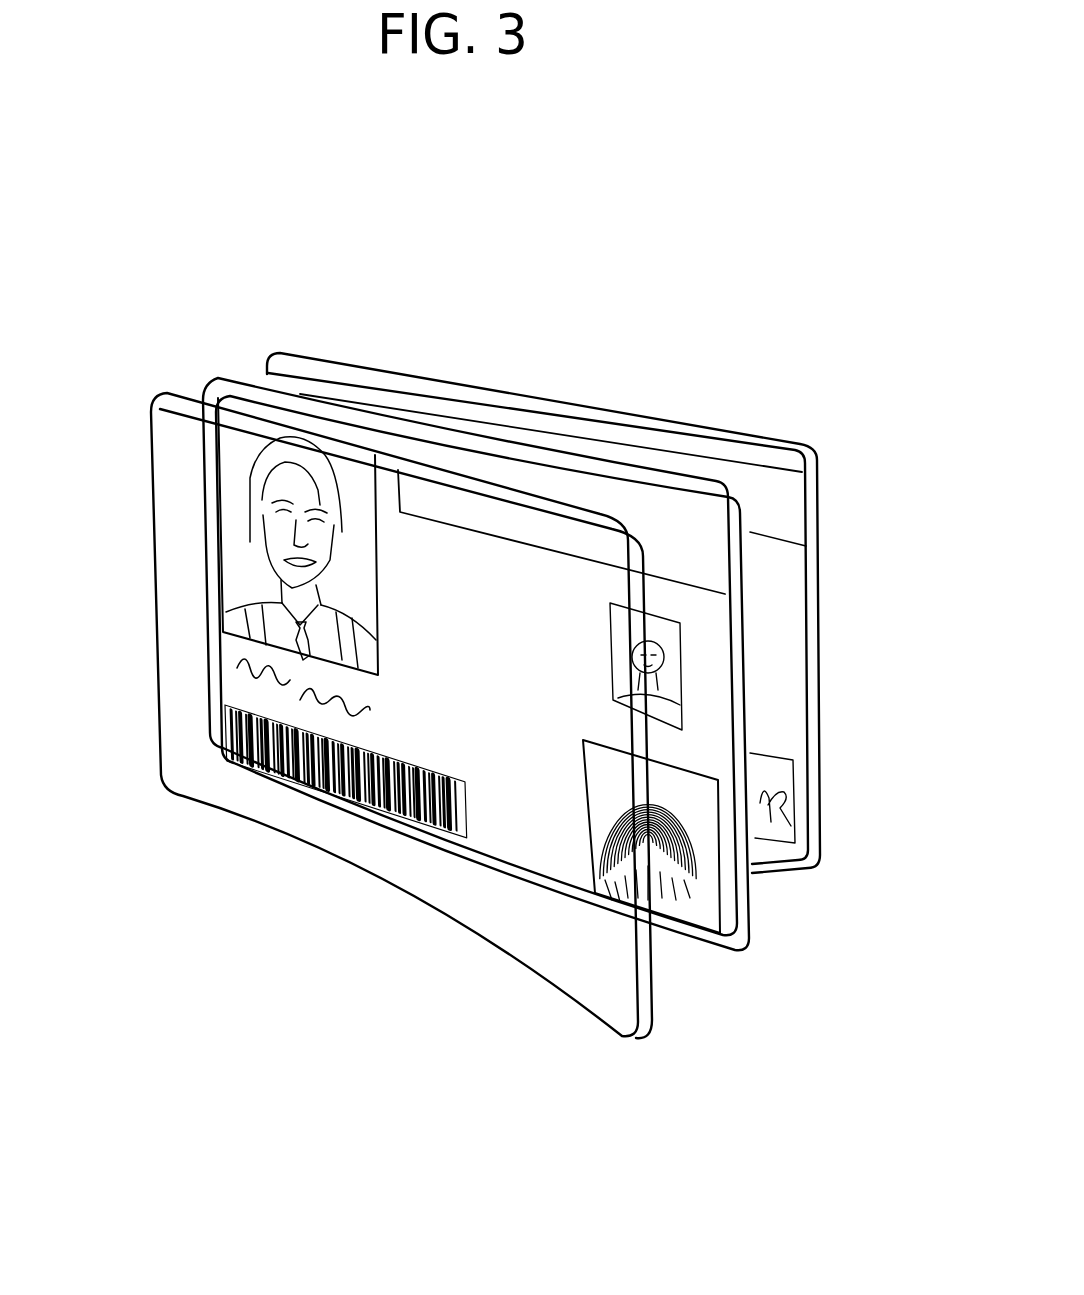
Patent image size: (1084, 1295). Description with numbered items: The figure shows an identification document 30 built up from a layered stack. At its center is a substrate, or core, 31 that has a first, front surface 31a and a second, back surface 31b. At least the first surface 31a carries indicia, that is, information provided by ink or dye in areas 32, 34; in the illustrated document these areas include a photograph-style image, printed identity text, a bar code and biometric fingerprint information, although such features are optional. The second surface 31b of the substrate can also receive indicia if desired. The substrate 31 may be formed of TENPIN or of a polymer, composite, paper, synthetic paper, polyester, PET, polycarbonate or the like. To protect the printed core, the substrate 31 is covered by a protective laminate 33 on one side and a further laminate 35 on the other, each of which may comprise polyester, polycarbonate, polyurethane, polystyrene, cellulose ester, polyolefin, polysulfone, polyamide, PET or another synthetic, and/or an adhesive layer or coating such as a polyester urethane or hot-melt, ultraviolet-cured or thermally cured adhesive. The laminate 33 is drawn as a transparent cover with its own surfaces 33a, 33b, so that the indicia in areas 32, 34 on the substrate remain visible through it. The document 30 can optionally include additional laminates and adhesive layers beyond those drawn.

The identification document 30 is at (500, 685).
The substrate 31 is at (500, 571).
The first surface 31a is at (672, 515).
The second surface 31b is at (727, 493).
The area 32 is at (673, 743).
The protective laminate 33 is at (545, 785).
The first surface of the laminate 33a is at (655, 978).
The second surface of the laminate 33b is at (610, 1033).
The area 34 is at (226, 554).
The protective laminate 35 is at (833, 463).